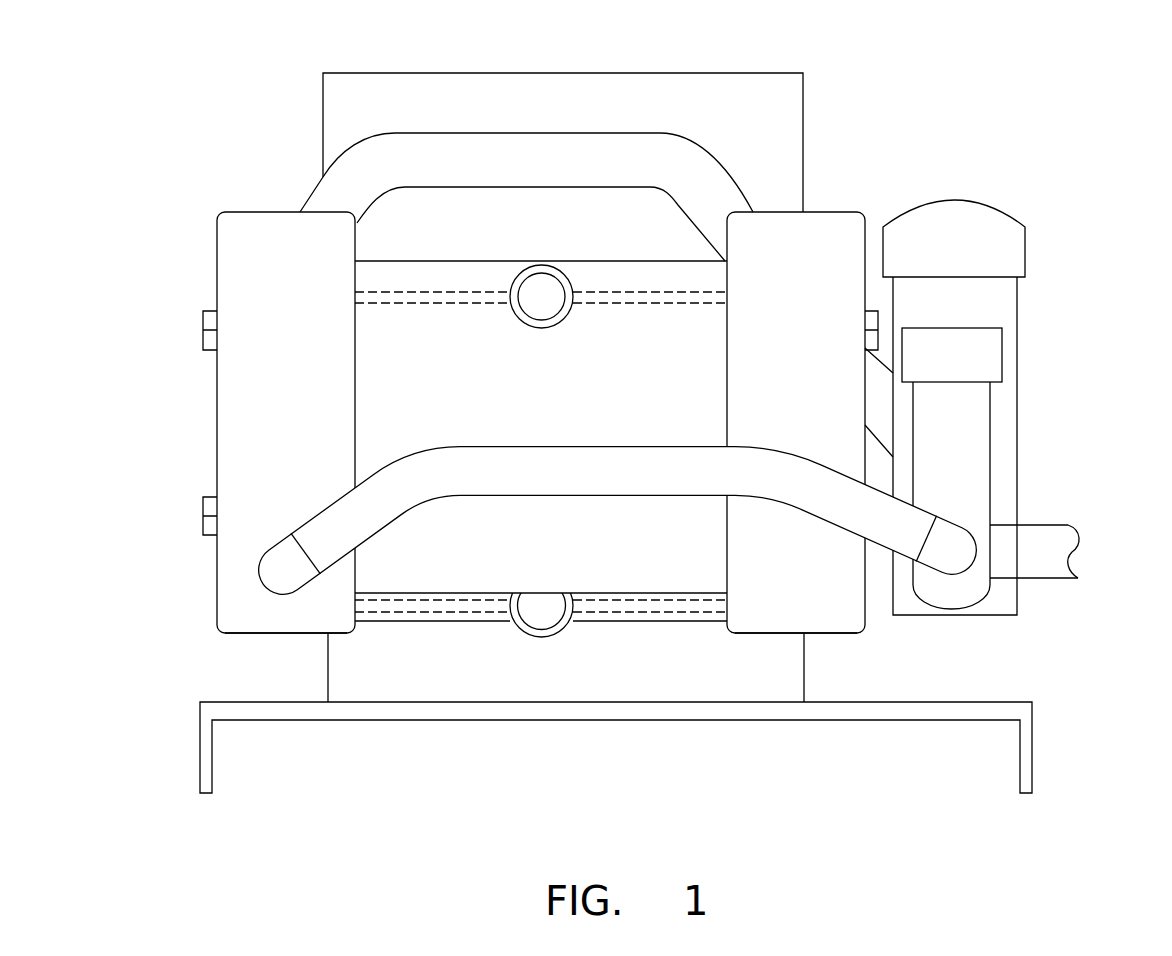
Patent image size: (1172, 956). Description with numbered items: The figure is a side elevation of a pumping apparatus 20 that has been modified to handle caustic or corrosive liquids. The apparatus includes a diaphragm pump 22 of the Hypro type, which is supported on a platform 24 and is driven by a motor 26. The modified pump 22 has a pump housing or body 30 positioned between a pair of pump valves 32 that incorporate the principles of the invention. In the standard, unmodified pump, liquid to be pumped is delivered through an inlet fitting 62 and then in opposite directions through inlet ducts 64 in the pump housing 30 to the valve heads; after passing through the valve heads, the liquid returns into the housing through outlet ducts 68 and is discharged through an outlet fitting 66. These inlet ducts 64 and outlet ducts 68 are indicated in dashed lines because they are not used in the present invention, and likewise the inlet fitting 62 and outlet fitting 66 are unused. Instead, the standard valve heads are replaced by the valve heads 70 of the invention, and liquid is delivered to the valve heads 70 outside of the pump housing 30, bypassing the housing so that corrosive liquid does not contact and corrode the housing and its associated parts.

The pumping apparatus 20 is at (890, 135).
The diaphragm pump 22 is at (277, 147).
The platform 24 is at (1032, 702).
The motor 26 is at (803, 73).
The pump housing 30 is at (483, 260).
The pump valves 32 is at (217, 212).
The inlet fitting 62 is at (537, 638).
The inlet ducts 64 is at (470, 612).
The outlet fitting 66 is at (527, 325).
The outlet ducts 68 is at (463, 308).
The valve heads 70 is at (220, 634).